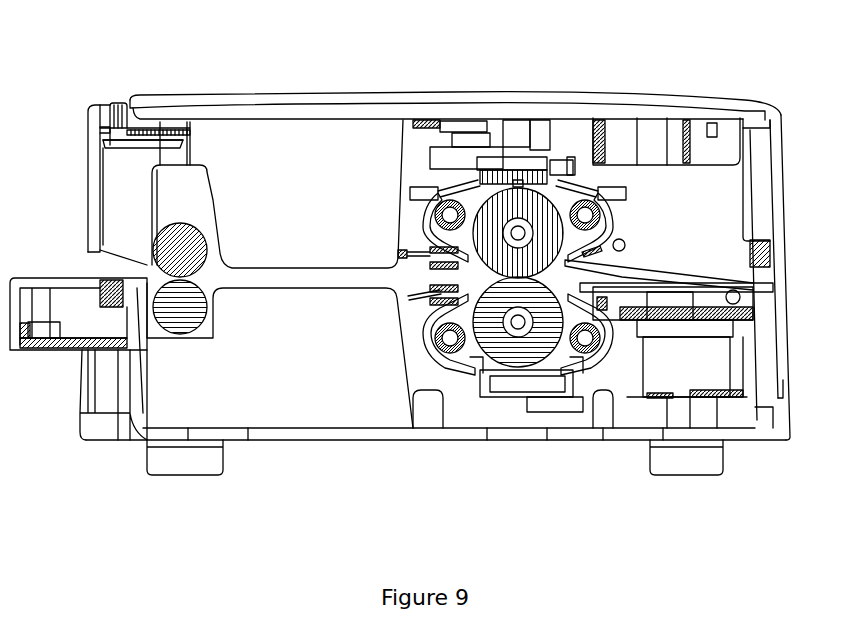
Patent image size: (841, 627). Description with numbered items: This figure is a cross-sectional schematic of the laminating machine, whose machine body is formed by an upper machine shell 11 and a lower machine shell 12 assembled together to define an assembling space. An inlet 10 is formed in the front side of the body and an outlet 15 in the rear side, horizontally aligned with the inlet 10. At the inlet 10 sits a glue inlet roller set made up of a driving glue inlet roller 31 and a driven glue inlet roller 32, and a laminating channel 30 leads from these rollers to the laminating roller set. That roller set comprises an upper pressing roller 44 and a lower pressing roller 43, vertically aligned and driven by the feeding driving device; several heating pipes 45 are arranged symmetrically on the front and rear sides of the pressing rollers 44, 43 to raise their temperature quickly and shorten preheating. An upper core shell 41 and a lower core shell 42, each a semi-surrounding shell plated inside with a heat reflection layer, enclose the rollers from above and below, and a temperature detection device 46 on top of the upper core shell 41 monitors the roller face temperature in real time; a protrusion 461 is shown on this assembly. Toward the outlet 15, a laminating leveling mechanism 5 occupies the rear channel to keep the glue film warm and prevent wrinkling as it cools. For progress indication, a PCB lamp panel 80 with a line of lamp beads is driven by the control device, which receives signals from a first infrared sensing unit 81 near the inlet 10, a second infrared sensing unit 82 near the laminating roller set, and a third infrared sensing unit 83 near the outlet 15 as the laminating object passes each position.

The laminating leveling mechanism 5 is at (657, 270).
The inlet 10 is at (92, 265).
The upper machine shell 11 is at (268, 108).
The lower machine shell 12 is at (284, 442).
The outlet 15 is at (778, 277).
The laminating channel 30 is at (293, 281).
The driving glue inlet roller 31 is at (184, 331).
The driven glue inlet roller 32 is at (181, 224).
The upper core shell 41 is at (435, 197).
The lower core shell 42 is at (591, 356).
The lower pressing roller 43 is at (510, 357).
The upper pressing roller 44 is at (558, 178).
The heating pipe 45 is at (432, 205).
The temperature detection device 46 is at (505, 165).
The protrusion 461 is at (523, 183).
The PCB lamp panel 80 is at (115, 103).
The first infrared sensing unit 81 is at (102, 298).
The second infrared sensing unit 82 is at (398, 253).
The third infrared sensing unit 83 is at (773, 254).